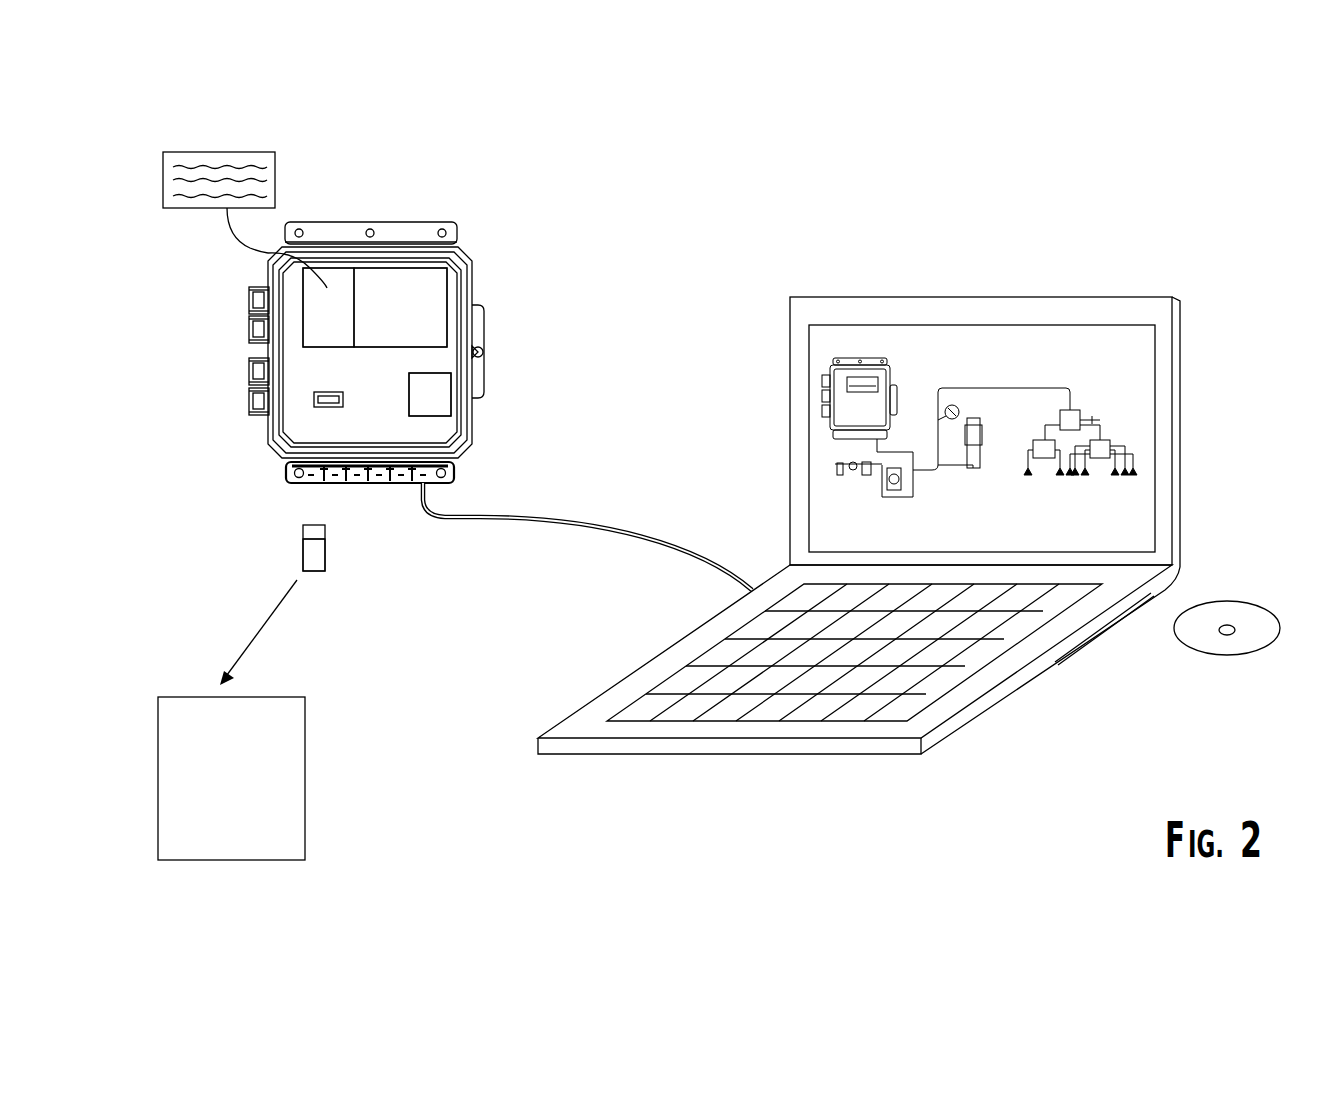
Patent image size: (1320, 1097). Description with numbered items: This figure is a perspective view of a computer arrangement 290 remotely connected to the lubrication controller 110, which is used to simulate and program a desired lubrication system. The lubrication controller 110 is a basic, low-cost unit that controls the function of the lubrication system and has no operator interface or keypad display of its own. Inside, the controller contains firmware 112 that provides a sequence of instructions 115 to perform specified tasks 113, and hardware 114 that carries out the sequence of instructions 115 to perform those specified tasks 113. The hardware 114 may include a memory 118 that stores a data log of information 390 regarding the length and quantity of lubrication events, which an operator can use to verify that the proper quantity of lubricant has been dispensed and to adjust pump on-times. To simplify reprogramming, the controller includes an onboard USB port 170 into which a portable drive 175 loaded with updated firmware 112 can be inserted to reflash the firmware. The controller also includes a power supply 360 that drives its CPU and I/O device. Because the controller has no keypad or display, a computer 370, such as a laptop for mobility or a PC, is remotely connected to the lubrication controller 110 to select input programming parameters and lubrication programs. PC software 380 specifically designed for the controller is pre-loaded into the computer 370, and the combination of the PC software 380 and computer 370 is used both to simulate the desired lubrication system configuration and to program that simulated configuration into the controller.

The lubrication controller 110 is at (401, 196).
The firmware 112 is at (434, 320).
The specified tasks 113 is at (260, 832).
The hardware 114 is at (433, 283).
The sequence of instructions 115 is at (305, 742).
The memory 118 is at (317, 320).
The onboard USB port 170 is at (323, 407).
The portable drive 175 is at (325, 560).
The computer arrangement 290 is at (753, 365).
The power supply 360 is at (440, 401).
The computer 370 is at (899, 753).
The PC software 380 is at (1222, 647).
The data log of information 390 is at (227, 152).